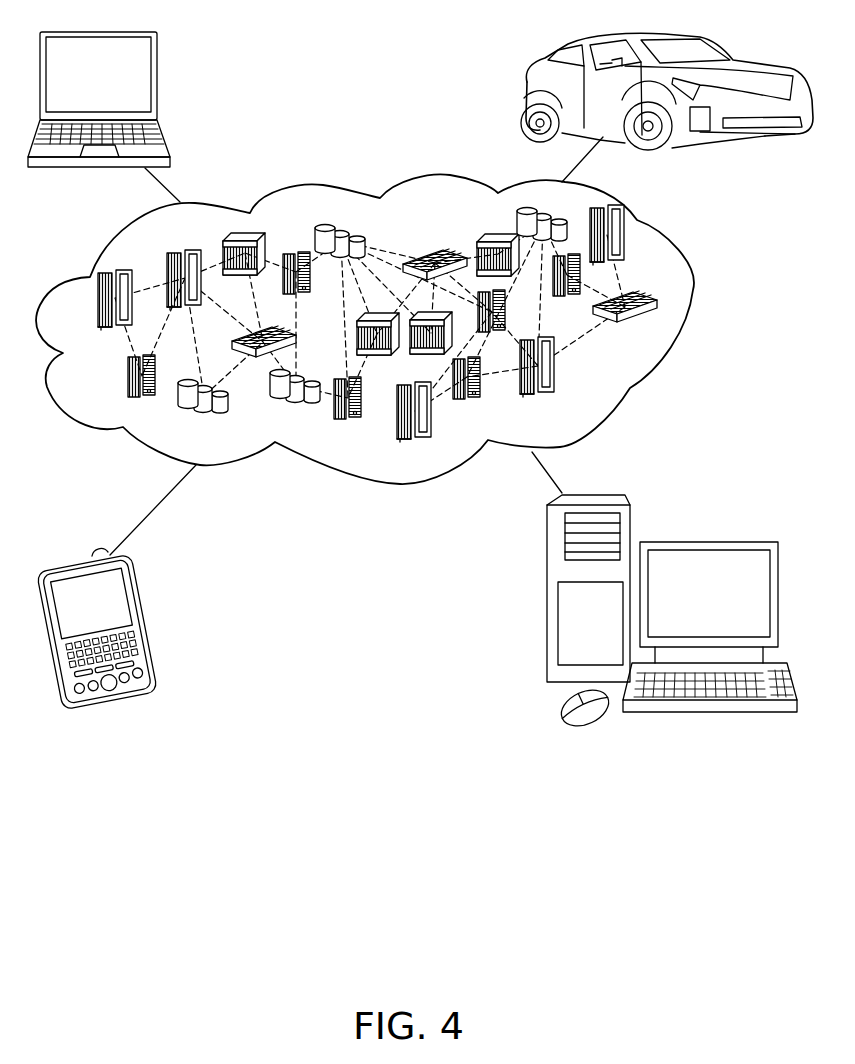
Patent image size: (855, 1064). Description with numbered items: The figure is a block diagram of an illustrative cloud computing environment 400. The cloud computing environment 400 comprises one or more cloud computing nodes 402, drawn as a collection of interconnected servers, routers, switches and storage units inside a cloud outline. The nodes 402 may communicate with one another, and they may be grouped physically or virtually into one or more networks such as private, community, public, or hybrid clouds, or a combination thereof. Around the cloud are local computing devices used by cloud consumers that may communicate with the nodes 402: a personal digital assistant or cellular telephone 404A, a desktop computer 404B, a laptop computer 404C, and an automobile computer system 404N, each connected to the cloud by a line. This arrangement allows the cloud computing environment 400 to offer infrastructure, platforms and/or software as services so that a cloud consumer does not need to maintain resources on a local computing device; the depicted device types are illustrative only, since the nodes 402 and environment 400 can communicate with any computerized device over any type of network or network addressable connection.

The cloud computing environment 400 is at (663, 302).
The cloud computing nodes 402 is at (657, 328).
The personal digital assistant (PDA) or cellular telephone 404A is at (138, 592).
The desktop computer 404B is at (697, 542).
The laptop computer 404C is at (158, 60).
The automobile computer system 404N is at (527, 93).